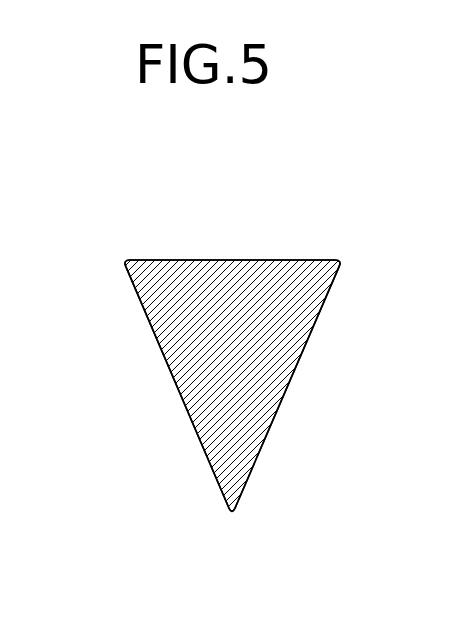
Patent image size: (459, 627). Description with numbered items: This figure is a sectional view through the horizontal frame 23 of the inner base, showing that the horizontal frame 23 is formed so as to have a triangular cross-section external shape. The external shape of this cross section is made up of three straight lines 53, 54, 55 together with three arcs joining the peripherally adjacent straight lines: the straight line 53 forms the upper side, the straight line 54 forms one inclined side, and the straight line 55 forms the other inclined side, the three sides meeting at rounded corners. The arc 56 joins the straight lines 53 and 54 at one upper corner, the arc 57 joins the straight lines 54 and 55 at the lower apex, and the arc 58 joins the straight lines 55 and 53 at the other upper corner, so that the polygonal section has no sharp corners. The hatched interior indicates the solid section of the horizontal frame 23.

The horizontal frame 23 is at (262, 285).
The straight line 53 is at (185, 258).
The straight line 54 is at (305, 365).
The straight line 55 is at (167, 370).
The arc 56 is at (342, 259).
The arc 57 is at (232, 517).
The arc 58 is at (121, 261).